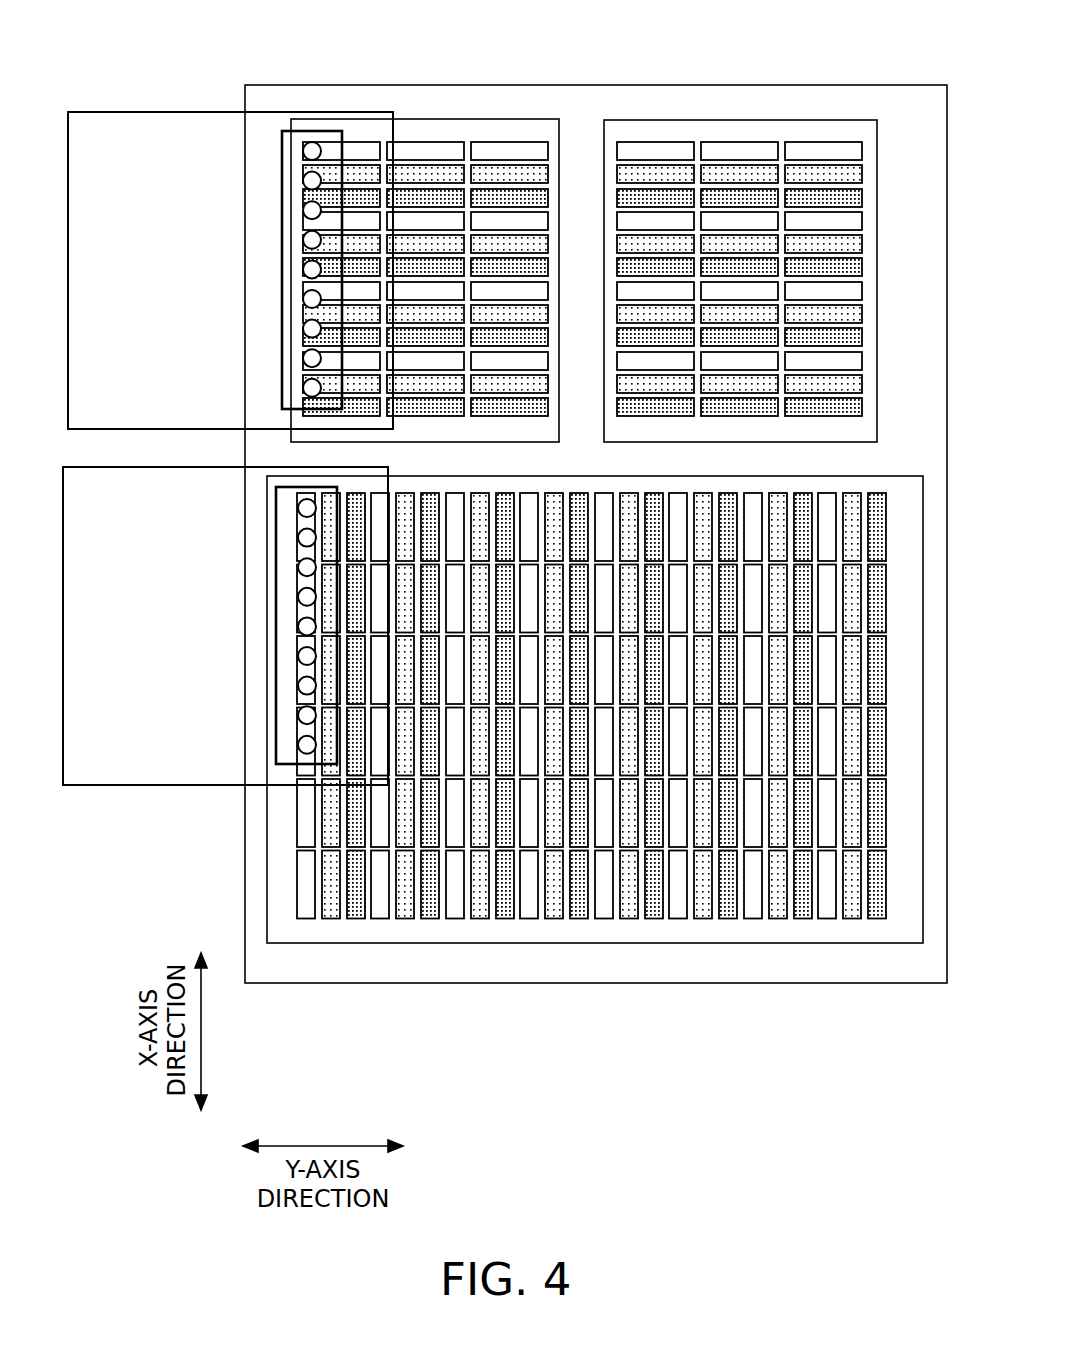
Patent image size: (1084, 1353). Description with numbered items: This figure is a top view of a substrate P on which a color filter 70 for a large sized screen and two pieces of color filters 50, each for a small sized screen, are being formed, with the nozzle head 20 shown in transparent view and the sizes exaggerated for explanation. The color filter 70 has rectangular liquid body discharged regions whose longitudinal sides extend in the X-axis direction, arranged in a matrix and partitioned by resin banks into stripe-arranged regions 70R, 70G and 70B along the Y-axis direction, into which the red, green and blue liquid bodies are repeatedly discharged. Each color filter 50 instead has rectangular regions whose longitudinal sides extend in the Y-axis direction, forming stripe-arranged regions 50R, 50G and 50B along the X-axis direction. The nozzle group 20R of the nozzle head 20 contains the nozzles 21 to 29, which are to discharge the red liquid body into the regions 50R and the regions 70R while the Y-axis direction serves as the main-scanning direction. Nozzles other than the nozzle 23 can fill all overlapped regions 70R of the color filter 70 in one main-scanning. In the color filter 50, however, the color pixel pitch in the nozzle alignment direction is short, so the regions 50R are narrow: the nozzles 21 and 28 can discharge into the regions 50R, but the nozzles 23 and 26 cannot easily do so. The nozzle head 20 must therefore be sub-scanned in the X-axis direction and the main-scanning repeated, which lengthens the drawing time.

The substrate P is at (783, 85).
The nozzle head 20 is at (157, 112).
The nozzle group 20R is at (282, 258).
The nozzle 21 is at (303, 151).
The nozzle 23 is at (303, 210).
The nozzle 26 is at (303, 299).
The nozzle 28 is at (303, 359).
The nozzle 29 is at (298, 745).
The color filter 50 is at (417, 119).
The region 50R is at (485, 153).
The region 50G is at (507, 175).
The region 50B is at (527, 197).
The color filter 70 is at (487, 943).
The region 70R is at (312, 910).
The region 70G is at (336, 910).
The region 70B is at (362, 910).